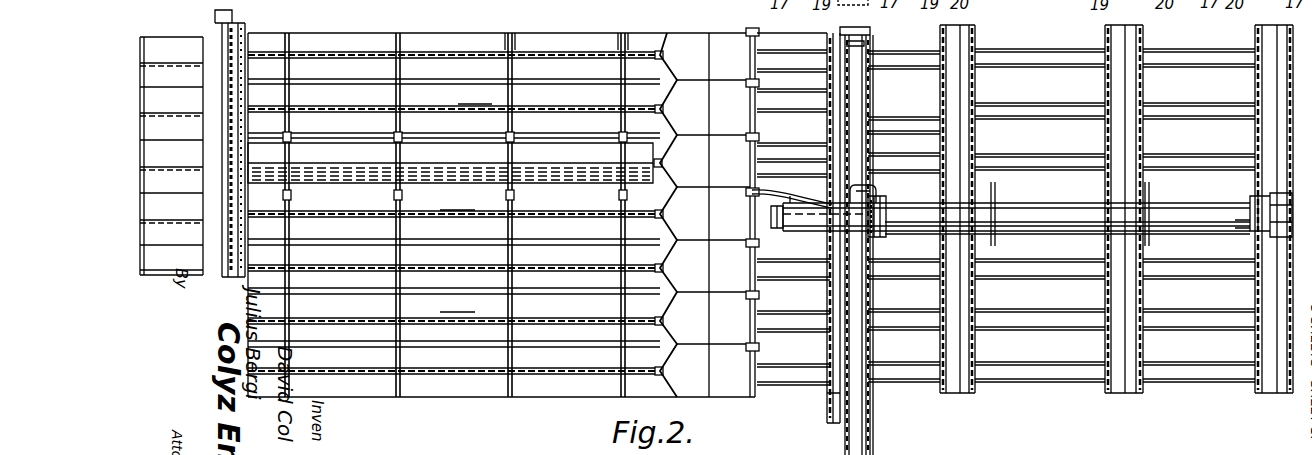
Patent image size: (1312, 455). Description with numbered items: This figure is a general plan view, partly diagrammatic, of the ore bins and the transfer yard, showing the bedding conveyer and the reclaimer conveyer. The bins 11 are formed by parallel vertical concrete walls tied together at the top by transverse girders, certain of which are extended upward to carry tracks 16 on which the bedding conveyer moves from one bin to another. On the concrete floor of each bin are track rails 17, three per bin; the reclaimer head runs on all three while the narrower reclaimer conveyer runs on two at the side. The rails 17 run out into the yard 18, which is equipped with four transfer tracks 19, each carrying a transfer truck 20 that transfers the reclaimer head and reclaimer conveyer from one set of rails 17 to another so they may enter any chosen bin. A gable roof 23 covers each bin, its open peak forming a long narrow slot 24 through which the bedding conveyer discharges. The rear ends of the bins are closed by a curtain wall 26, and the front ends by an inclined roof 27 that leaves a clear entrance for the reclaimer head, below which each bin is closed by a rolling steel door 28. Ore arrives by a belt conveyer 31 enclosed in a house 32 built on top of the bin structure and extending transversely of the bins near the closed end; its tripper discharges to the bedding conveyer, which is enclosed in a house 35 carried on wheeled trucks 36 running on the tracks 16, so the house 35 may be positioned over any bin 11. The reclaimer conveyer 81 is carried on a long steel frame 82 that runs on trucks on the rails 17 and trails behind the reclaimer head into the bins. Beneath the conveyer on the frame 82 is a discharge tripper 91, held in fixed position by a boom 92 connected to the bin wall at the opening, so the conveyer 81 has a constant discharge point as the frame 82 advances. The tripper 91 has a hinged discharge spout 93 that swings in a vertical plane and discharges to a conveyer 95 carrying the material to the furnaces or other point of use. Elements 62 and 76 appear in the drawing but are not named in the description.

The bins 11 is at (501, 215).
The tracks 16 is at (373, 39).
The track rails 17 is at (1166, 270).
The yard 18 is at (1060, 214).
The transfer tracks 19 is at (908, 276).
The transfer truck 20 is at (1278, 228).
The gable roof 23 is at (454, 213).
The slot 24 is at (562, 58).
The curtain wall 26 is at (147, 160).
The inclined roof 27 is at (705, 215).
The rolling steel door 28 is at (750, 50).
The conveyer 31 is at (234, 14).
The house 32 is at (213, 100).
The house 35 is at (455, 163).
The wheeled trucks 36 is at (405, 138).
The end cap 62 is at (772, 217).
The hanger 76 is at (620, 36).
The reclaimer conveyer 81 is at (1016, 217).
The frame 82 is at (1069, 233).
The discharge tripper 91 is at (887, 216).
The boom 92 is at (770, 190).
The discharge spout 93 is at (864, 189).
The conveyer 95 is at (851, 255).